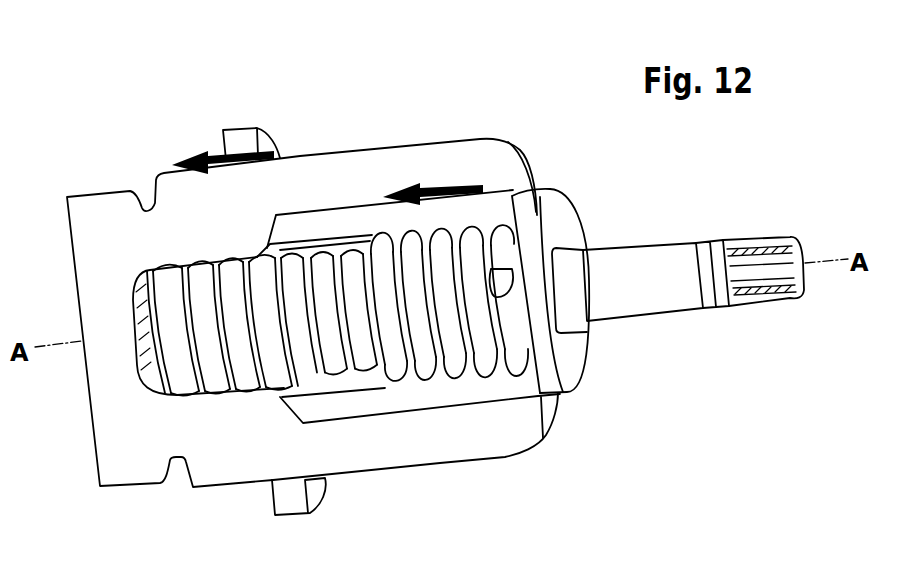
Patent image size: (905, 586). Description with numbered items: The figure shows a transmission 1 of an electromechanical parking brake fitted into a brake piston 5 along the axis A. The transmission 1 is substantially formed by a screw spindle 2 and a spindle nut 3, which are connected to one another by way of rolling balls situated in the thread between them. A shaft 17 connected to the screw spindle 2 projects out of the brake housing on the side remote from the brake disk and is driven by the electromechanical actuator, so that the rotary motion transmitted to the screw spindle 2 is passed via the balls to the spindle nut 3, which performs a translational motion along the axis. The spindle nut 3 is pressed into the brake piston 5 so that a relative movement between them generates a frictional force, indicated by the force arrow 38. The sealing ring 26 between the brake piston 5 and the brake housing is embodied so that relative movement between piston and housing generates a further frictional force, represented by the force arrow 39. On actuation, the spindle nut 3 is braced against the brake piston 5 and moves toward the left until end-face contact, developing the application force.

The transmission 1 is at (366, 219).
The screw spindle 2 is at (207, 358).
The spindle nut 3 is at (478, 387).
The brake piston 5 is at (350, 443).
The shaft 17 is at (650, 278).
The sealing ring 26 is at (245, 143).
The force arrow 38 is at (455, 198).
The force arrow 39 is at (212, 152).